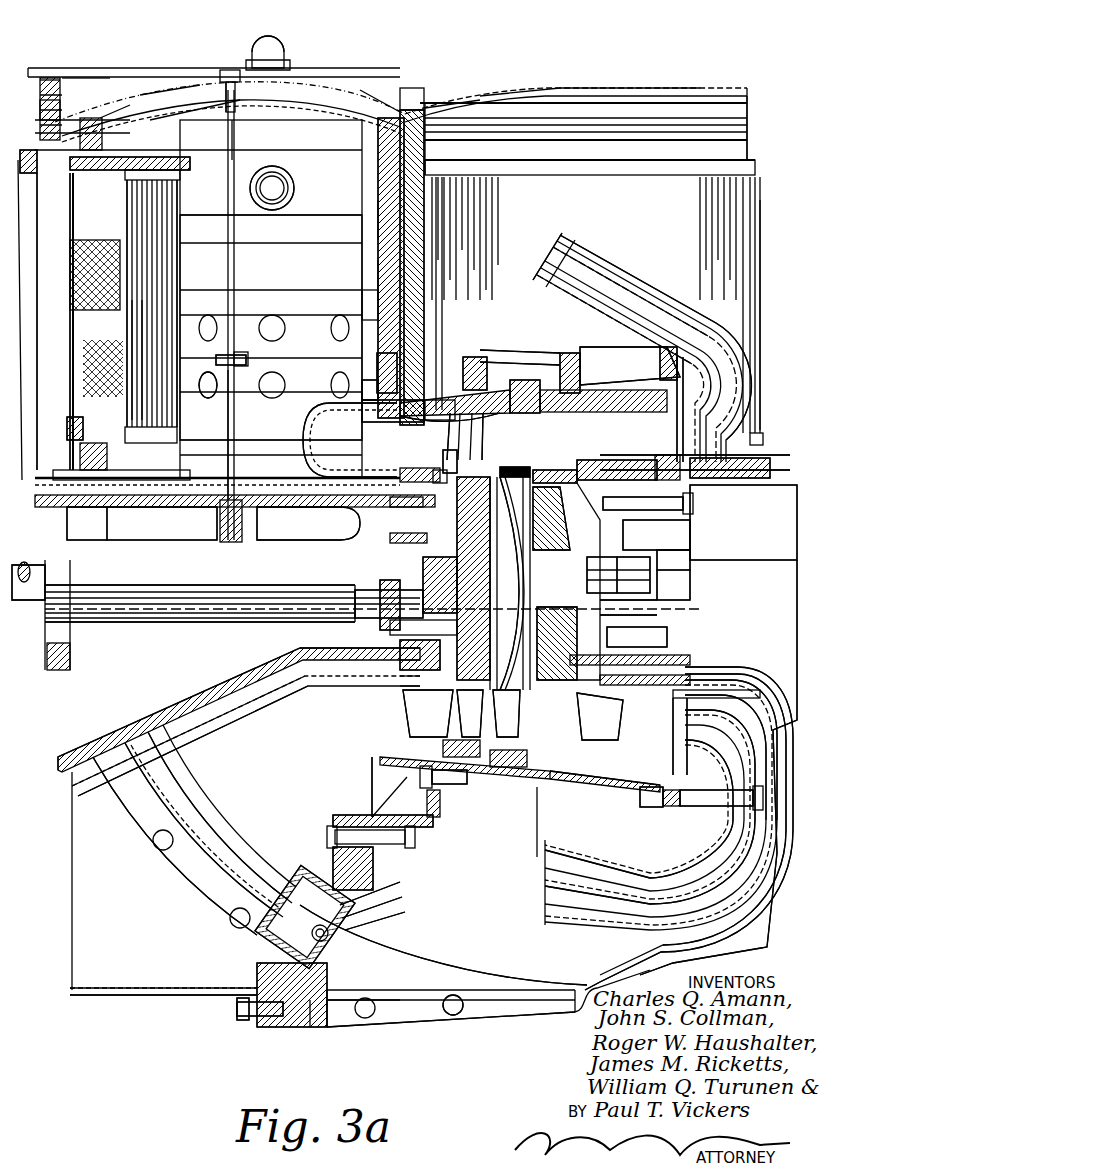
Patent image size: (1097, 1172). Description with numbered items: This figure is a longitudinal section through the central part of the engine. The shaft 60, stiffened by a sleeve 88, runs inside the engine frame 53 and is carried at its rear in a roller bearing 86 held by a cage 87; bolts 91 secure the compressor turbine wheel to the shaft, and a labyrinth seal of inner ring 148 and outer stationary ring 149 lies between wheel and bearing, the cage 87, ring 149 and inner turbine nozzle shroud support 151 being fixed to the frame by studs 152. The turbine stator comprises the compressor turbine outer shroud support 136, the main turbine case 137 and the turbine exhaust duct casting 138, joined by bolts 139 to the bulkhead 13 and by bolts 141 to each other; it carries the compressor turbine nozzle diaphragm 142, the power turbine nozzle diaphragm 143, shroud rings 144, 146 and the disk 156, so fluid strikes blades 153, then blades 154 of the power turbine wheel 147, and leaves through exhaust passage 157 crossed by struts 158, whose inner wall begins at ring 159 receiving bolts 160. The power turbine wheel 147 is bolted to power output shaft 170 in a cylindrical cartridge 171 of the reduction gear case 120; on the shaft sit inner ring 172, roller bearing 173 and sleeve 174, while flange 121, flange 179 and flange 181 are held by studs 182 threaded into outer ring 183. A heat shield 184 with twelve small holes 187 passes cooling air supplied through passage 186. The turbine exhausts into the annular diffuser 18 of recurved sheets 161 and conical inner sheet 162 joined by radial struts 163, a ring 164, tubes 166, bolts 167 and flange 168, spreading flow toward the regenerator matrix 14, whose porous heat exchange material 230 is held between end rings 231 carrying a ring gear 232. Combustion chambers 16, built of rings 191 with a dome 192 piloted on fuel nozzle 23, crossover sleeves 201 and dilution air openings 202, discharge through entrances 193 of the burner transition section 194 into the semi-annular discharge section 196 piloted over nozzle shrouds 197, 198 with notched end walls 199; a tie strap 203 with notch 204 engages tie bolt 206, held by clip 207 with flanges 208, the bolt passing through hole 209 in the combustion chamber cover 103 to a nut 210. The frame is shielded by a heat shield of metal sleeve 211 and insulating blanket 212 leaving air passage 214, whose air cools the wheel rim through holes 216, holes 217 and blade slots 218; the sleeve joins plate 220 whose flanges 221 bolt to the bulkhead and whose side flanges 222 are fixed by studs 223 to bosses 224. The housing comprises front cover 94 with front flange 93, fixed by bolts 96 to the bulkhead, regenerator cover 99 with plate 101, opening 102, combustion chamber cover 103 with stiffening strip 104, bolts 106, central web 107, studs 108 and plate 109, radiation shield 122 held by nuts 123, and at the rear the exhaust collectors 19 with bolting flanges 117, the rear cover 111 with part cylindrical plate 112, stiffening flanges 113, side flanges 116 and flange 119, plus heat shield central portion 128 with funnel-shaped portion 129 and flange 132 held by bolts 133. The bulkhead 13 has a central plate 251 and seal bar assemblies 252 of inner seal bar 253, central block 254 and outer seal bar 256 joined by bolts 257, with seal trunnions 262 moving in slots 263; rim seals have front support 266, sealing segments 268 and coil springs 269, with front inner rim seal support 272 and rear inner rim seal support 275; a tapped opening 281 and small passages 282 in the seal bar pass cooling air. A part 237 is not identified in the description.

The bulkhead 13 is at (382, 296).
The regenerator matrix 14 is at (750, 240).
The combustion chamber 16 is at (378, 250).
The annular diffuser 18 is at (625, 268).
The exhaust collector 19 is at (500, 362).
The fuel nozzle 23 is at (285, 50).
The engine frame 53 is at (160, 720).
The shaft 60 is at (380, 585).
The roller bearing 86 is at (370, 620).
The cage 87 is at (385, 630).
The sleeve 88 is at (100, 622).
The bolts 91 is at (40, 110).
The front flange 93 is at (60, 190).
The front cover 94 is at (150, 996).
The bolts 96 is at (237, 1010).
The regenerator cover 99 is at (582, 88).
The plate 101 is at (96, 78).
The opening 102 is at (165, 88).
The combustion chamber cover 103 is at (372, 96).
The stiffening strip 104 is at (72, 78).
The bolts 106 is at (50, 78).
The central web 107 is at (440, 106).
The studs 108 is at (404, 170).
The light metal plate 109 is at (748, 110).
The rear cover 111 is at (740, 858).
The part cylindrical plate 112 is at (463, 1005).
The stiffening flanges 113 is at (318, 1027).
The side flanges 116 is at (440, 1020).
The bolting flanges 117 is at (760, 462).
The flange 119 is at (740, 468).
The reduction gear case 120 is at (740, 525).
The flange 121 is at (690, 530).
The radiation shield 122 is at (510, 96).
The nuts 123 is at (412, 88).
The central portion 128 is at (765, 470).
The funnel-shaped portion 129 is at (735, 695).
The flange 132 is at (745, 930).
The bolts 133 is at (380, 1012).
The compressor turbine outer shroud support 136 is at (378, 388).
The main turbine case 137 is at (520, 380).
The turbine exhaust duct casting 138 is at (605, 360).
The bolts 139 is at (510, 648).
The bolts 141 is at (560, 800).
The compressor turbine nozzle diaphragm 142 is at (400, 440).
The power turbine nozzle diaphragm 143 is at (484, 380).
The outer shroud ring 144 is at (470, 412).
The outer shroud ring 146 is at (562, 365).
The power turbine wheel 147 is at (548, 466).
The inner ring 148 is at (430, 572).
The outer stationary ring 149 is at (472, 590).
The inner turbine nozzle shroud support 151 is at (435, 705).
The studs 152 is at (345, 520).
The blades 153 is at (462, 720).
The blades 154 is at (545, 720).
The disk 156 is at (515, 520).
The exhaust passage 157 is at (658, 372).
The struts 158 is at (640, 740).
The ring 159 is at (600, 690).
The bolts 160 is at (715, 680).
The recurved annular metal sheets 161 is at (650, 305).
The conical inner sheet 162 is at (545, 288).
The radial struts 163 is at (560, 258).
The ring 164 is at (712, 318).
The tubes 166 is at (640, 840).
The bolts 167 is at (640, 796).
The flange 168 is at (676, 440).
The power output shaft 170 is at (660, 605).
The cylindrical cartridge 171 is at (690, 555).
The inner ring 172 is at (600, 593).
The roller bearing 173 is at (632, 593).
The sleeve 174 is at (690, 580).
The flange 179 is at (673, 712).
The flange 181 is at (640, 632).
The studs 182 is at (693, 497).
The outer ring 183 is at (640, 470).
The heat shield 184 is at (610, 452).
The passage 186 is at (555, 560).
The small holes 187 is at (565, 470).
The rings 191 is at (380, 218).
The dome 192 is at (200, 112).
The entrances 193 is at (385, 398).
The burner transition section 194 is at (308, 420).
The semi-annular discharge section 196 is at (387, 395).
The first turbine nozzle shroud 197 is at (392, 720).
The first turbine nozzle shroud 198 is at (395, 688).
The end walls 199 is at (370, 770).
The crossover sleeves 201 is at (295, 188).
The dilution air openings 202 is at (285, 305).
The tie strap 203 is at (206, 394).
The notch 204 is at (234, 385).
The tie bolt 206 is at (238, 458).
The clip 207 is at (216, 360).
The flanges 208 is at (250, 360).
The hole 209 is at (238, 118).
The nut 210 is at (230, 70).
The metal sleeve 211 is at (245, 700).
The blanket of heat insulating material 212 is at (290, 690).
The annular air passage 214 is at (240, 680).
The holes 216 is at (395, 705).
The holes 217 is at (478, 615).
The blade slots 218 is at (458, 462).
The plate 220 is at (128, 790).
The flanges 221 is at (255, 935).
The side flanges 222 is at (135, 507).
The studs 223 is at (83, 430).
The bosses 224 is at (95, 507).
The porous heat exchange material 230 is at (150, 265).
The end rings 231 is at (178, 178).
The ring gear 232 is at (90, 170).
The wall 237 is at (70, 430).
The central plate 251 is at (432, 825).
The seal bar assemblies 252 is at (372, 892).
The inner seal bar 253 is at (333, 860).
The central block 254 is at (375, 905).
The outer seal bar 256 is at (262, 1027).
The bolts 257 is at (376, 270).
The trunnions 262 is at (380, 920).
The slots 263 is at (322, 925).
The front support 266 is at (112, 118).
The flanged sealing segments 268 is at (100, 240).
The coil springs 269 is at (37, 160).
The front inner rim seal support 272 is at (150, 512).
The rear inner rim seal support 275 is at (470, 975).
The tapped opening 281 is at (340, 1027).
The small passages 282 is at (257, 985).